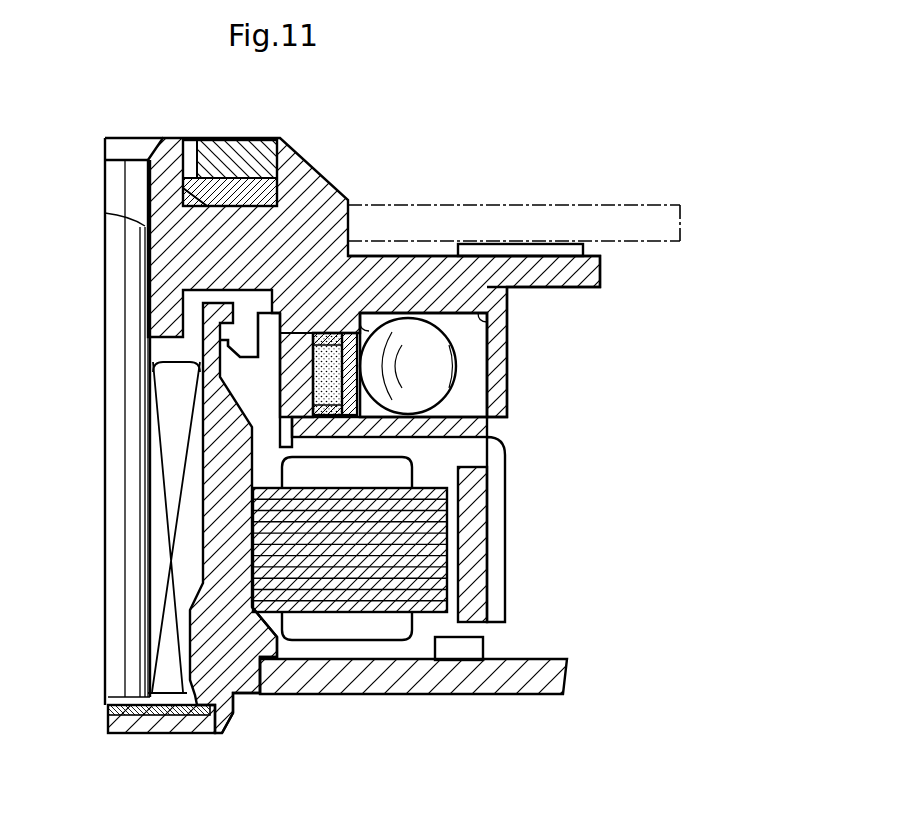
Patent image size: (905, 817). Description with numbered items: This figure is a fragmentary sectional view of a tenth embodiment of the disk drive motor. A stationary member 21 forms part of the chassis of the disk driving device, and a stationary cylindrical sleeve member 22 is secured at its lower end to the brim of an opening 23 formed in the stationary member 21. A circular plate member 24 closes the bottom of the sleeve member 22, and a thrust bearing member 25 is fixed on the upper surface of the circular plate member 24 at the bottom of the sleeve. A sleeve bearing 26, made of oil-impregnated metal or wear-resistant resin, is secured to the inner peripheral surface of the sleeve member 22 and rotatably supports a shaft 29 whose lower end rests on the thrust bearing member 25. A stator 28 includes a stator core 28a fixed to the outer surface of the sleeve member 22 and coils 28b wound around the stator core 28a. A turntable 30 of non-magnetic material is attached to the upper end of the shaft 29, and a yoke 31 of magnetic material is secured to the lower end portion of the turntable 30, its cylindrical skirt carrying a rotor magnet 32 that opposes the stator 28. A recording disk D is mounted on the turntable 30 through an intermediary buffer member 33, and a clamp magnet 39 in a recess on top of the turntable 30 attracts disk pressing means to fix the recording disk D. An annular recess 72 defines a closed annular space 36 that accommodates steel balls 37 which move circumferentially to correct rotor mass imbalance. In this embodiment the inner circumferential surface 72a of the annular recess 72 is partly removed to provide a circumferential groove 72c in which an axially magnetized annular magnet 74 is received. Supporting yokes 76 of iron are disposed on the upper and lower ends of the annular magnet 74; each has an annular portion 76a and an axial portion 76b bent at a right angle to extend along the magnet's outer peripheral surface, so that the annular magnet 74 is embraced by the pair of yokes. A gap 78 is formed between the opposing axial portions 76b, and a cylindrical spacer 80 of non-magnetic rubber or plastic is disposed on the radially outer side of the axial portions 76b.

The stationary member 21 is at (518, 682).
The stationary cylindrical sleeve member 22 is at (208, 513).
The opening 23 is at (250, 672).
The circular plate member 24 is at (126, 735).
The thrust bearing member 25 is at (175, 718).
The sleeve bearing 26 is at (160, 578).
The stator 28 is at (416, 608).
The stator core 28a is at (448, 537).
The coils 28b is at (345, 635).
The shaft 29 is at (110, 316).
The turntable 30 is at (160, 197).
The yoke 31 is at (497, 507).
The rotor magnet 32 is at (478, 600).
The buffer member 33 is at (575, 243).
The annular space 36 is at (473, 388).
The balls 37 is at (457, 358).
The clamp magnet 39 is at (260, 140).
The annular recess 72 is at (490, 330).
The inner circumferential surface 72a is at (328, 322).
The circumferential groove 72c is at (305, 330).
The annular magnet 74 is at (318, 393).
The supporting yokes 76 is at (270, 293).
The annular portion 76a is at (340, 338).
The axial portion 76b is at (357, 338).
The gap 78 is at (310, 375).
The cylindrical spacer 80 is at (405, 438).
The recording disk D is at (512, 205).